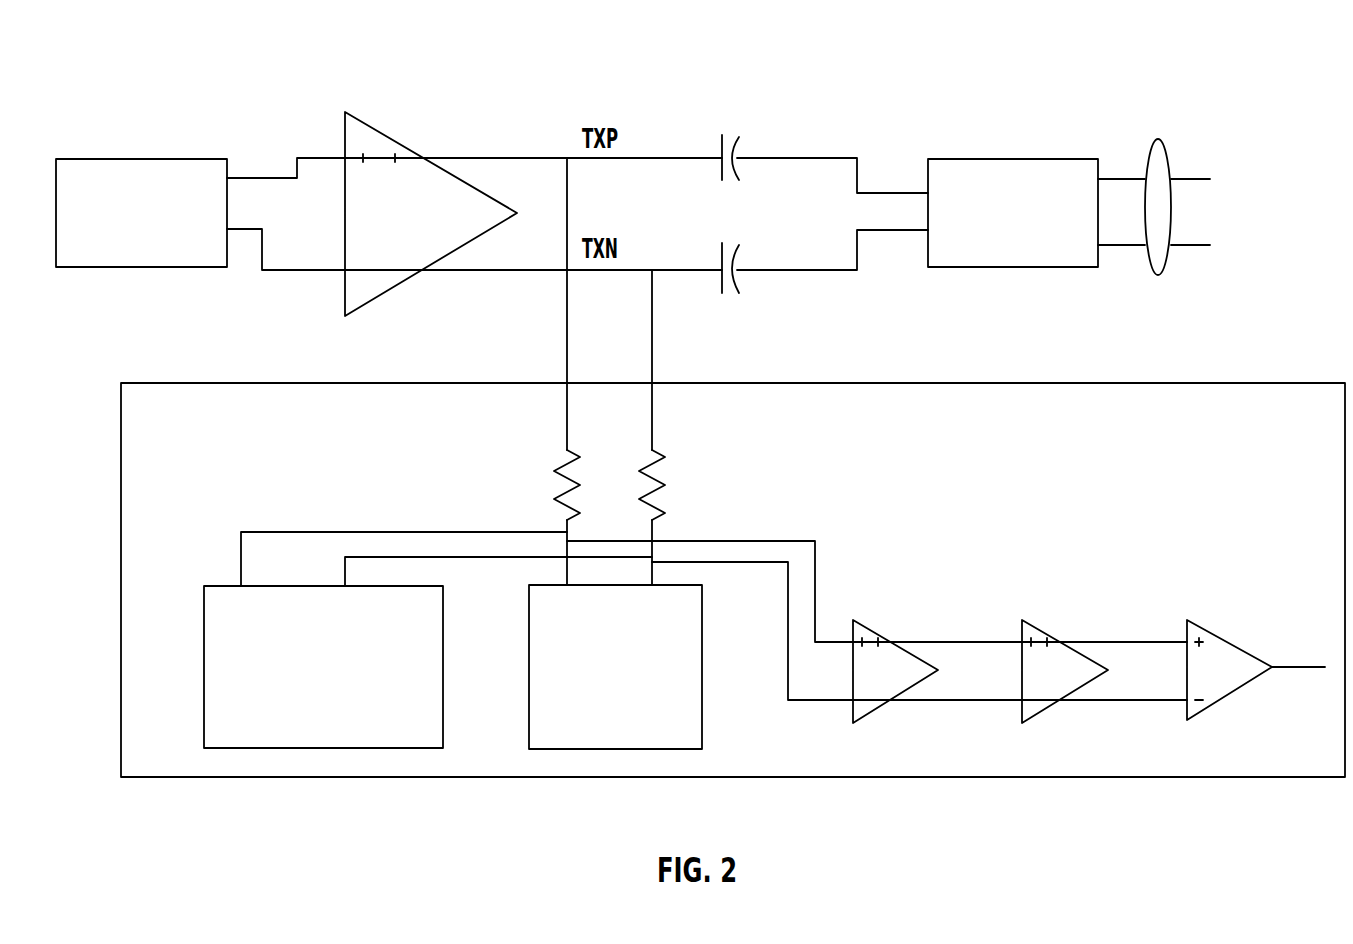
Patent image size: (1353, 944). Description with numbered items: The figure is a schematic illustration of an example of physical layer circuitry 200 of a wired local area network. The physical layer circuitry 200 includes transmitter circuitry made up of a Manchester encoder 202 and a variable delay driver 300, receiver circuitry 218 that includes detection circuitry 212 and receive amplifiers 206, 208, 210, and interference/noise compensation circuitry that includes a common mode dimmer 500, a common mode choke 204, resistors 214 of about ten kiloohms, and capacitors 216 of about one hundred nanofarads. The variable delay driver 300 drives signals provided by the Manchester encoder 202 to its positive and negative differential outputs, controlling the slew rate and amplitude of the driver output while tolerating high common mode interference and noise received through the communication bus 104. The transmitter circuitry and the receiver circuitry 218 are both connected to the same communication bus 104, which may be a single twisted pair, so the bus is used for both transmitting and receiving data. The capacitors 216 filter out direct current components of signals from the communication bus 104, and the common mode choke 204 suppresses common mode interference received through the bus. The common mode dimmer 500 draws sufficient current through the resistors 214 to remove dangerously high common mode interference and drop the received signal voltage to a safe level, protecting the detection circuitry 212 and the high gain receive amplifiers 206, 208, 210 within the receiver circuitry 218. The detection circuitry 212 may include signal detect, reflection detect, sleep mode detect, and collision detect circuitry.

The physical layer circuitry 200 is at (1262, 98).
The Manchester encoder 202 is at (147, 158).
The variable delay driver 300 is at (383, 130).
The capacitors 216 is at (733, 150).
The common mode choke 204 is at (1015, 158).
The communication bus 104 is at (1158, 140).
The receiver circuitry 218 is at (907, 383).
The resistors 214 is at (557, 465).
The detection circuitry 212 is at (204, 673).
The common mode dimmer 500 is at (529, 680).
The receive amplifier 206 is at (882, 632).
The receive amplifier 208 is at (1048, 632).
The receive amplifier 210 is at (1212, 630).